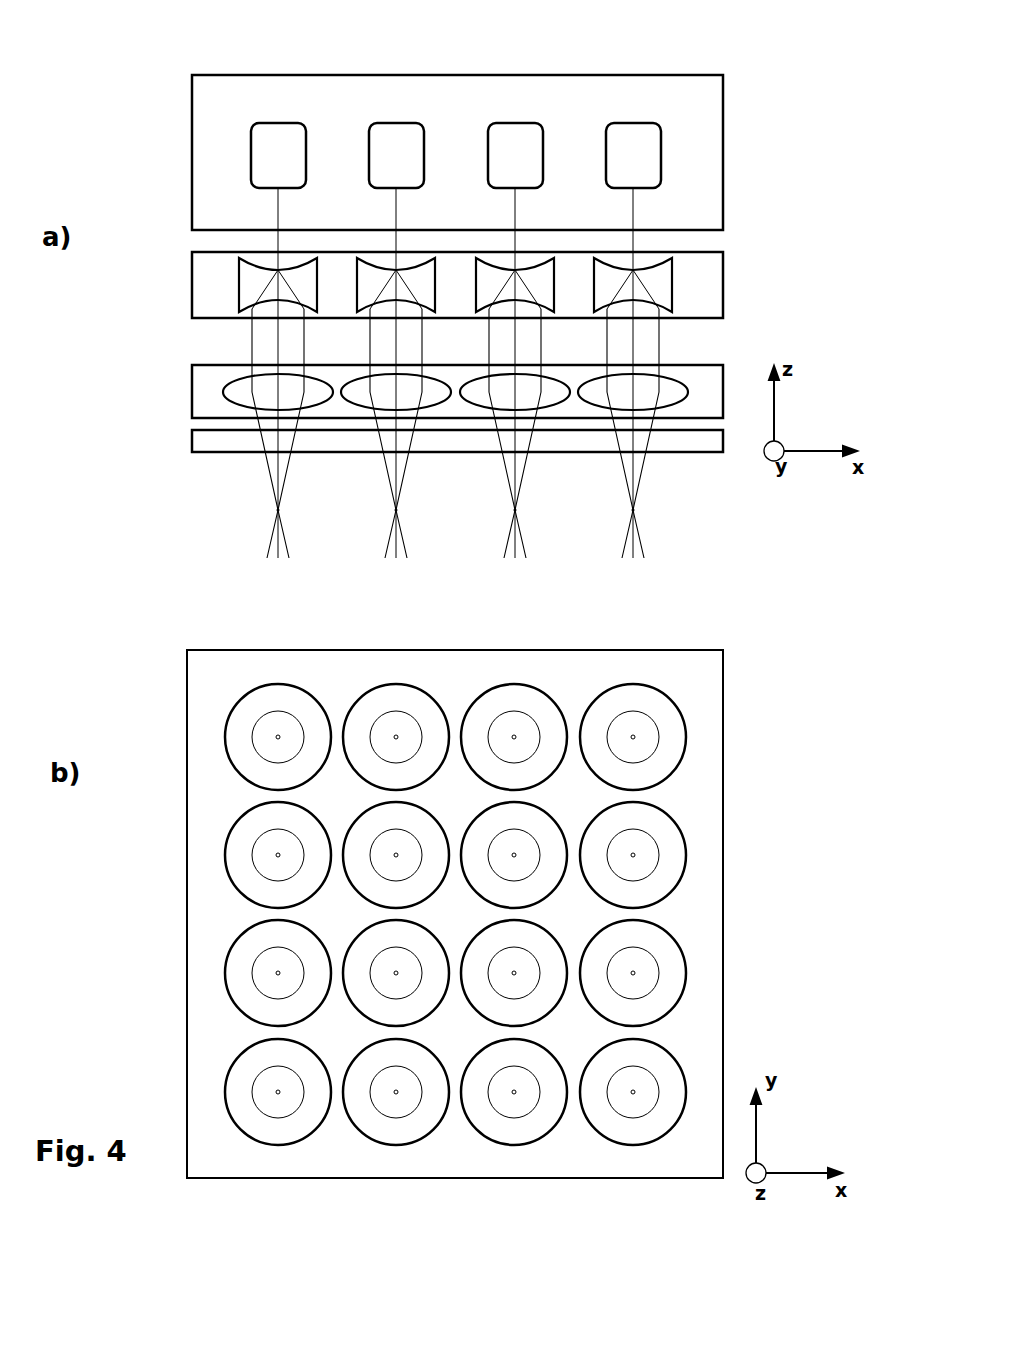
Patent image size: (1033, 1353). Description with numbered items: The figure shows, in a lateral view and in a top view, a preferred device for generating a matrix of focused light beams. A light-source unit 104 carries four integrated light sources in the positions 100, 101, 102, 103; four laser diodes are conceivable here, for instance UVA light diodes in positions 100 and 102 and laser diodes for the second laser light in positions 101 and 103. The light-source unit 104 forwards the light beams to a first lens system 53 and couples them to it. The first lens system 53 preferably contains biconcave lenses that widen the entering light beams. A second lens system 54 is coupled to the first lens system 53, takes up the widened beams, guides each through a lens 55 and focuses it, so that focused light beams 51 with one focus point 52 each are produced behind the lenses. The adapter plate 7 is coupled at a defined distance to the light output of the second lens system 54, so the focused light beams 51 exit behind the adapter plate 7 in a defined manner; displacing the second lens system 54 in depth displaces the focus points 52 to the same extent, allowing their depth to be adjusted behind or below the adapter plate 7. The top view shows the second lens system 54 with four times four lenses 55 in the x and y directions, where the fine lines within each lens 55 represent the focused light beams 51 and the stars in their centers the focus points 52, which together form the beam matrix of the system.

In FIG. 4a, the adapter plate 7 is at (203, 440).
In FIG. 4a, the focused light beams 51 is at (277, 463).
In FIG. 4b, the focused light beams 51 is at (660, 735).
In FIG. 4a, the focus points 52 is at (275, 510).
In FIG. 4b, the focus points 52 is at (279, 735).
In FIG. 4a, the first lens system 53 is at (708, 285).
In FIG. 4a, the second lens system 54 is at (713, 377).
In FIG. 4b, the second lens system 54 is at (732, 928).
In FIG. 4a, the lens 55 is at (238, 392).
In FIG. 4b, the lens 55 is at (682, 710).
In FIG. 4a, the light source position 100 is at (329, 134).
In FIG. 4a, the light source position 101 is at (447, 134).
In FIG. 4a, the light source position 102 is at (513, 138).
In FIG. 4a, the light source position 103 is at (639, 144).
In FIG. 4a, the light-source unit 104 is at (708, 167).